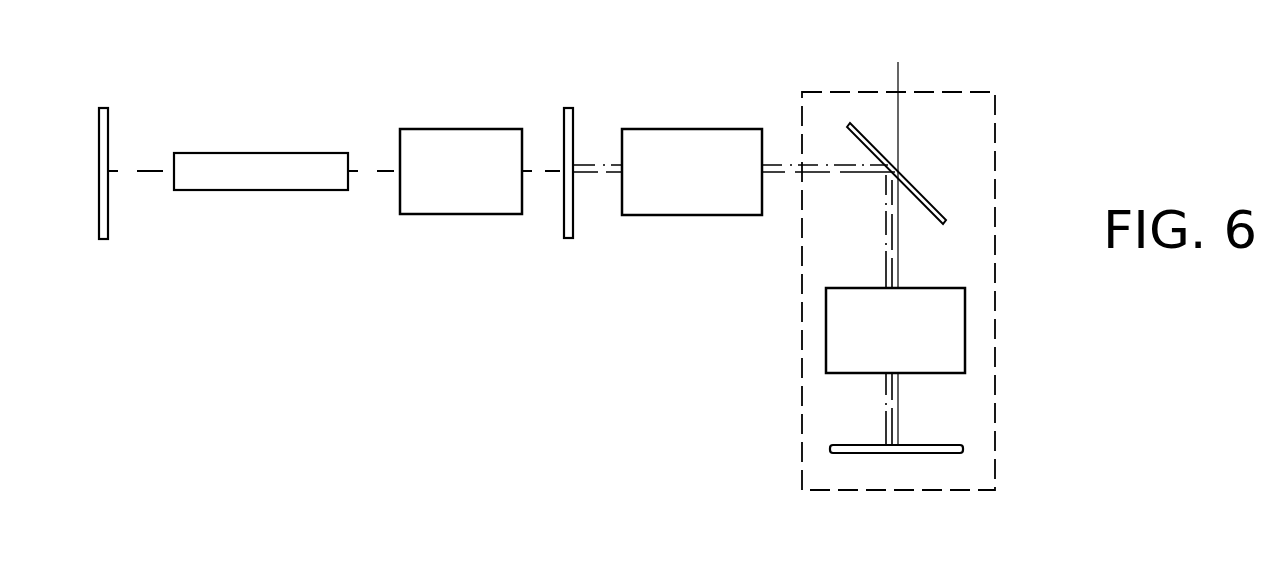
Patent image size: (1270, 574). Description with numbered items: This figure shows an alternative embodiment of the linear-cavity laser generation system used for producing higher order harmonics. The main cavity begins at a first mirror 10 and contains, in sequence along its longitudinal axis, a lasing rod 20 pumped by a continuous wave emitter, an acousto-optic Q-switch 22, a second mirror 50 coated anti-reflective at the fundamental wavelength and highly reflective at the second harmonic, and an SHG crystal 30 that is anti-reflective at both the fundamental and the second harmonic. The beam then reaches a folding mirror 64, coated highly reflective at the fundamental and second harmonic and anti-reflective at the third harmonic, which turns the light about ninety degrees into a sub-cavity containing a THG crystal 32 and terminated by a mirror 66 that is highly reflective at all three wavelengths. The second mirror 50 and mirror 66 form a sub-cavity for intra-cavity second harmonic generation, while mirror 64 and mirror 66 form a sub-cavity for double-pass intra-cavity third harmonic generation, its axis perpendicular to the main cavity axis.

The first mirror 10 is at (108, 135).
The lasing rod 20 is at (262, 156).
The acousto-optic Q-switch 22 is at (447, 214).
The second mirror 50 is at (573, 121).
The SHG crystal 30 is at (687, 204).
The mirror 64 is at (918, 191).
The THG crystal 32 is at (847, 301).
The mirror 66 is at (933, 445).